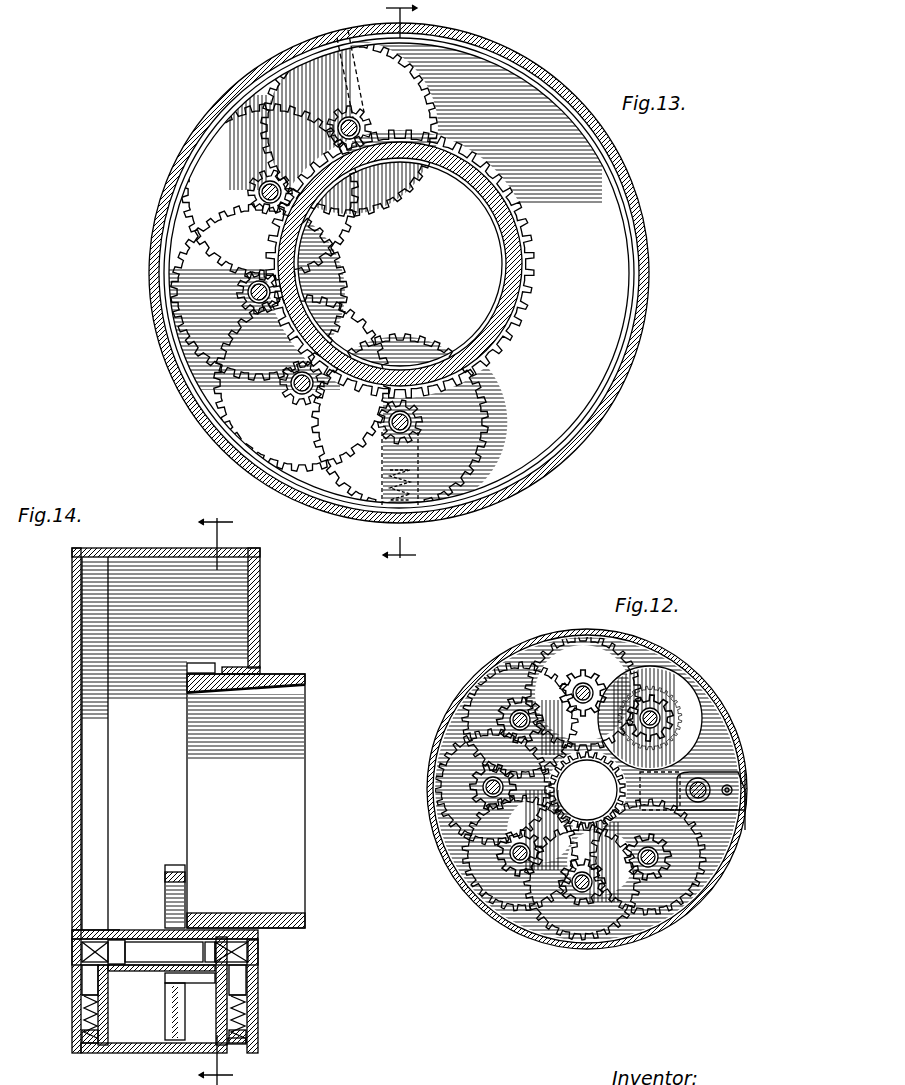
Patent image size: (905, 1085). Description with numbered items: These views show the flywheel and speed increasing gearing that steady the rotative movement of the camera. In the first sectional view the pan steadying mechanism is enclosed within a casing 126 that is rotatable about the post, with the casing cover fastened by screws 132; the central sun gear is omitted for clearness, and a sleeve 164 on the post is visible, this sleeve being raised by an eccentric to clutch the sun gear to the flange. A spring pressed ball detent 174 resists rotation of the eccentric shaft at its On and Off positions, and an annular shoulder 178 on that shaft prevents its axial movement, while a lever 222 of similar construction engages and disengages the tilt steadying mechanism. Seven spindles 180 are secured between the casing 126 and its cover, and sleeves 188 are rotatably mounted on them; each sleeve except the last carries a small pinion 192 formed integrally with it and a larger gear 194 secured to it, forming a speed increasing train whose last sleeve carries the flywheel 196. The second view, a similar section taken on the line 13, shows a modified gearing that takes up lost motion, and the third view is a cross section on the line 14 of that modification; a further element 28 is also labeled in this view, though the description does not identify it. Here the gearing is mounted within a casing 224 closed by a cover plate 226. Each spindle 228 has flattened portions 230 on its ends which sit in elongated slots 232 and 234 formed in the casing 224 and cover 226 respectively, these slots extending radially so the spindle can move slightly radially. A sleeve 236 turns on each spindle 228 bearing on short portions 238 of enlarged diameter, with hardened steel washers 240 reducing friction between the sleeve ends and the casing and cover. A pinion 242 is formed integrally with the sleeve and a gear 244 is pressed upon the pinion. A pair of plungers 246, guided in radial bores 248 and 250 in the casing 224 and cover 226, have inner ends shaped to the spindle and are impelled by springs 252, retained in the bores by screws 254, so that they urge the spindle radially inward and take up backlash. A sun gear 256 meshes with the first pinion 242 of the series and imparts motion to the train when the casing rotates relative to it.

In FIG. 13, the section line 14— 14 is at (421, 294).
In FIG. 14, the section line 14— 14 is at (120, 1060).
In FIG. 14, the section line 13— 13 is at (216, 533).
In FIG. 13, the shaft 28 is at (352, 75).
In FIG. 13, the flattened portions 230 is at (358, 118).
In FIG. 14, the flattened portions 230 is at (262, 956).
In FIG. 13, the pinion 242 is at (372, 125).
In FIG. 14, the pinion 242 is at (198, 972).
In FIG. 13, the gear 244 is at (153, 238).
In FIG. 14, the gear 244 is at (167, 876).
In FIG. 13, the sun gear 256 is at (478, 196).
In FIG. 14, the sun gear 256 is at (296, 838).
In FIG. 14, the casing 224 is at (262, 650).
In FIG. 14, the cover plate 226 is at (72, 731).
In FIG. 14, the elongated slot 232 is at (262, 934).
In FIG. 14, the spindle 228 is at (150, 948).
In FIG. 14, the enlarged diameter portions 238 is at (114, 944).
In FIG. 14, the elongated slot 234 is at (72, 932).
In FIG. 14, the sleeve 236 is at (138, 970).
In FIG. 14, the hardened steel washers 240 is at (96, 968).
In FIG. 14, the plungers 246 is at (92, 988).
In FIG. 14, the radial bore 248 is at (250, 1008).
In FIG. 14, the radial bore 250 is at (90, 1011).
In FIG. 14, the springs 252 is at (86, 1030).
In FIG. 14, the screws 254 is at (244, 1052).
In FIG. 12, the pinion 192 is at (572, 660).
In FIG. 12, the gear 194 is at (582, 652).
In FIG. 12, the spindles 180 is at (618, 690).
In FIG. 12, the sleeve 188 is at (470, 692).
In FIG. 12, the flywheel 196 is at (700, 702).
In FIG. 12, the annular shoulder 178 is at (738, 748).
In FIG. 12, the spring pressed ball detent 174 is at (735, 770).
In FIG. 12, the lever 222 is at (732, 791).
In FIG. 12, the sleeve 164 is at (587, 790).
In FIG. 12, the screws 132 is at (735, 820).
In FIG. 12, the casing 126 is at (540, 910).